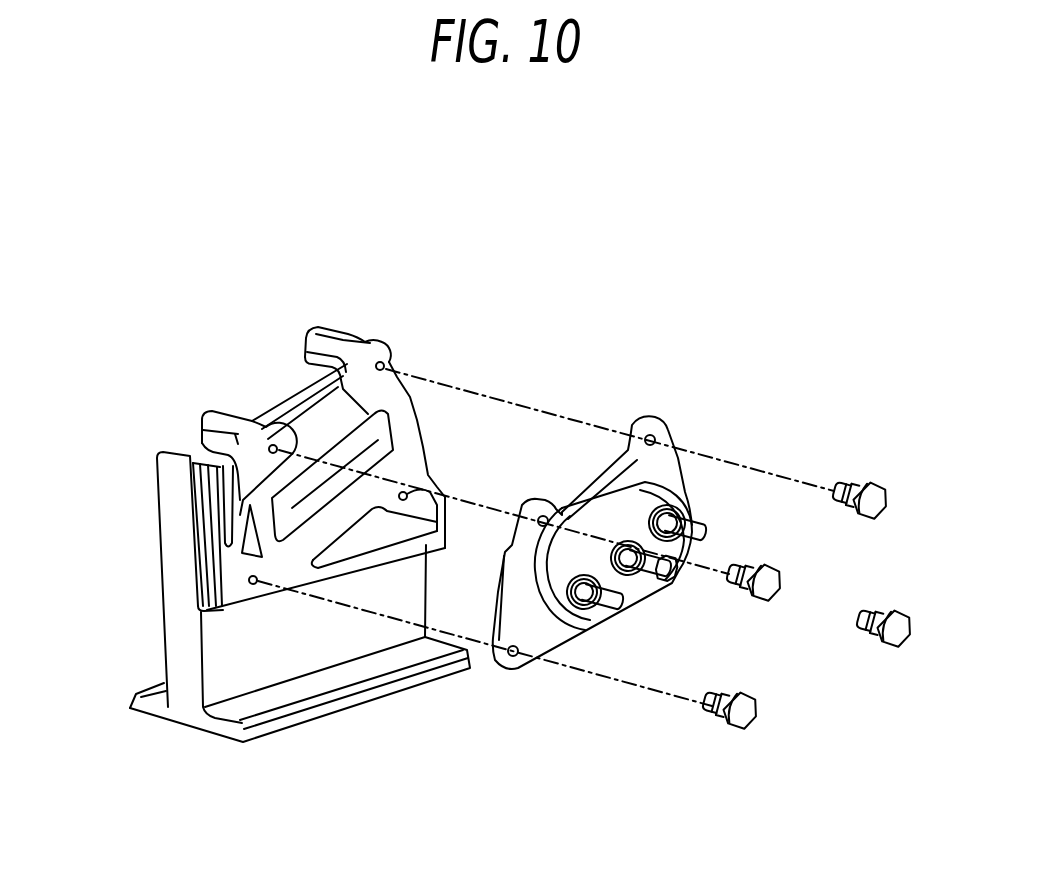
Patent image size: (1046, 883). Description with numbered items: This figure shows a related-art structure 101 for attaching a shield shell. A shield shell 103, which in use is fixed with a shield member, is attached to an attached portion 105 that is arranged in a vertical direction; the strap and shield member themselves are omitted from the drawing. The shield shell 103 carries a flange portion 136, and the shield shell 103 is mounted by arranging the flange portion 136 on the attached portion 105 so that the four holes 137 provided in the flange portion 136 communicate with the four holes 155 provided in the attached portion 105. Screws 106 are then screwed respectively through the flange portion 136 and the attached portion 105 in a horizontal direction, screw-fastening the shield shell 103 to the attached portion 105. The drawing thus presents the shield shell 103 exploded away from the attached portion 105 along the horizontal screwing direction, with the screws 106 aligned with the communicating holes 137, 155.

The structure for attaching a shield shell 101 is at (633, 234).
The shield shell 103 is at (691, 412).
The attached portion 105 is at (371, 298).
The screws 106 is at (758, 600).
The flange portion 136 is at (660, 463).
The holes 137 is at (651, 434).
The holes 155 is at (248, 580).